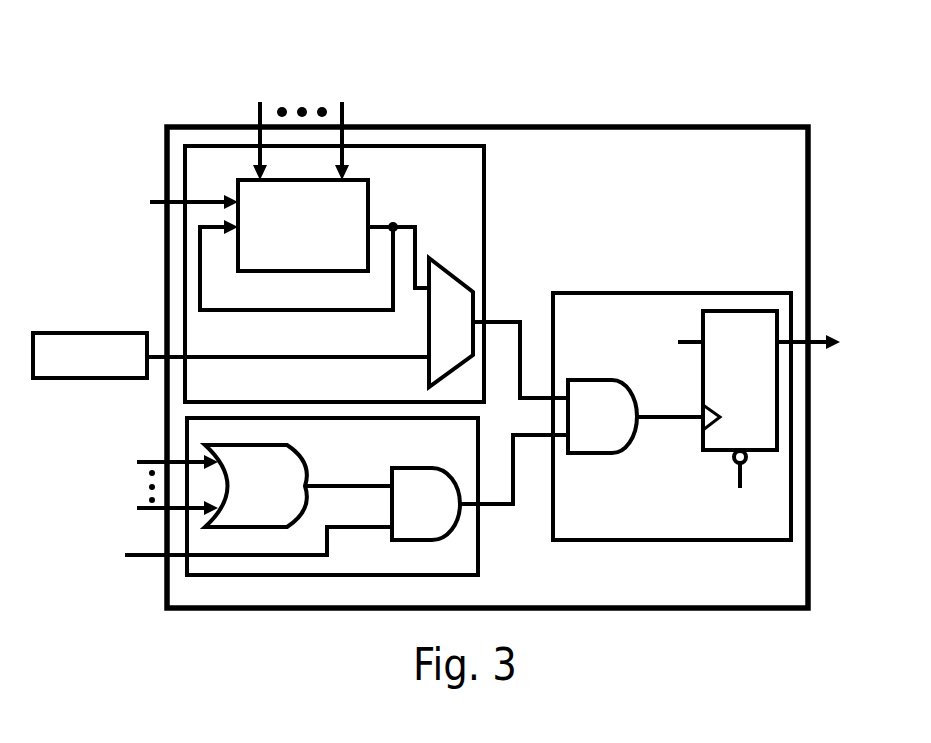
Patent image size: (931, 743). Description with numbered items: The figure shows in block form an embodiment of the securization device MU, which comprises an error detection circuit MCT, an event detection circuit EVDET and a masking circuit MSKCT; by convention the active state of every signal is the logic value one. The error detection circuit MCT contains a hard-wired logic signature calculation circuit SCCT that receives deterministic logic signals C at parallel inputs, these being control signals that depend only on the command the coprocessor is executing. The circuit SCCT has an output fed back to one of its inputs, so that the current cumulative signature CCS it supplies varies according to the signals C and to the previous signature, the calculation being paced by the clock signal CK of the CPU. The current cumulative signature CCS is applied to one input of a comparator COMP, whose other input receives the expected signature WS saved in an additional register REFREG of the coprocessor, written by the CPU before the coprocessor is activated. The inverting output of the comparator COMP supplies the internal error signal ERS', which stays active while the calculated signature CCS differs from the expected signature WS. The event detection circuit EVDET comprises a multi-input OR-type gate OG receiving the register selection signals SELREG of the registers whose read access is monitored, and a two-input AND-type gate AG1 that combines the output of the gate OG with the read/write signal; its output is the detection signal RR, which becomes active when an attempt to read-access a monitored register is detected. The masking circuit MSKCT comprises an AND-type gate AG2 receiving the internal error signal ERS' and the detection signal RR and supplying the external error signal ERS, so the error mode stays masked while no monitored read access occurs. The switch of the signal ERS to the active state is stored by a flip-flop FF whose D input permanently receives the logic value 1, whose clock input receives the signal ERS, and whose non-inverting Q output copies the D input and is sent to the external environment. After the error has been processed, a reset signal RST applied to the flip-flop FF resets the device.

The securization device MU is at (487, 367).
The error detection circuit MCT is at (334, 274).
The hard-wired logic signature calculation circuit SCCT is at (296, 245).
The deterministic logic signals C is at (302, 123).
The clock signal CK is at (175, 202).
The current cumulative signature CCS is at (398, 239).
The comparator COMP is at (457, 322).
The additional register REFREG is at (90, 356).
The expected signature WS is at (288, 342).
The internal error signal ERS' is at (520, 343).
The masking circuit MSKCT is at (672, 416).
The AND-type gate AG2 is at (602, 416).
The external error signal ERS is at (764, 372).
The flip-flop FF is at (740, 380).
The D input D is at (704, 342).
The logic value 1 is at (669, 342).
The non-inverting Q output Q is at (766, 342).
The reset signal RST is at (741, 490).
The event detection circuit EVDET is at (332, 496).
The register selection signals SELREG is at (126, 485).
The OR-type gate OG is at (298, 486).
The AND-type gate AG1 is at (426, 504).
The detection signal RR is at (514, 487).